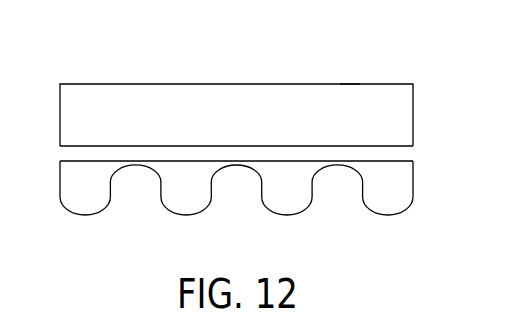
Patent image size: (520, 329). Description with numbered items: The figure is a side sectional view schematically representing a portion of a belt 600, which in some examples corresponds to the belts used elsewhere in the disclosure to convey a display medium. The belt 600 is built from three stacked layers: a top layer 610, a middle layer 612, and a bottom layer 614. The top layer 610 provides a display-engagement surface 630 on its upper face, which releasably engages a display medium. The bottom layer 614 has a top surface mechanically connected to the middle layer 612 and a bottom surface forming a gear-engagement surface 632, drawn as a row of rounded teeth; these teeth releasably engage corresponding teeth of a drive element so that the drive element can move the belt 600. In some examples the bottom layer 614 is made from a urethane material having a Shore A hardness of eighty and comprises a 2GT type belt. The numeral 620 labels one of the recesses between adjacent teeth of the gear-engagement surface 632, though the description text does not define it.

The belt 600 is at (118, 78).
The top layer 610 is at (402, 124).
The middle layer 612 is at (402, 153).
The bottom layer 614 is at (402, 184).
The display-engagement surface 630 is at (349, 78).
The gear-engagement surface 632 is at (345, 166).
The recess 620 is at (388, 215).